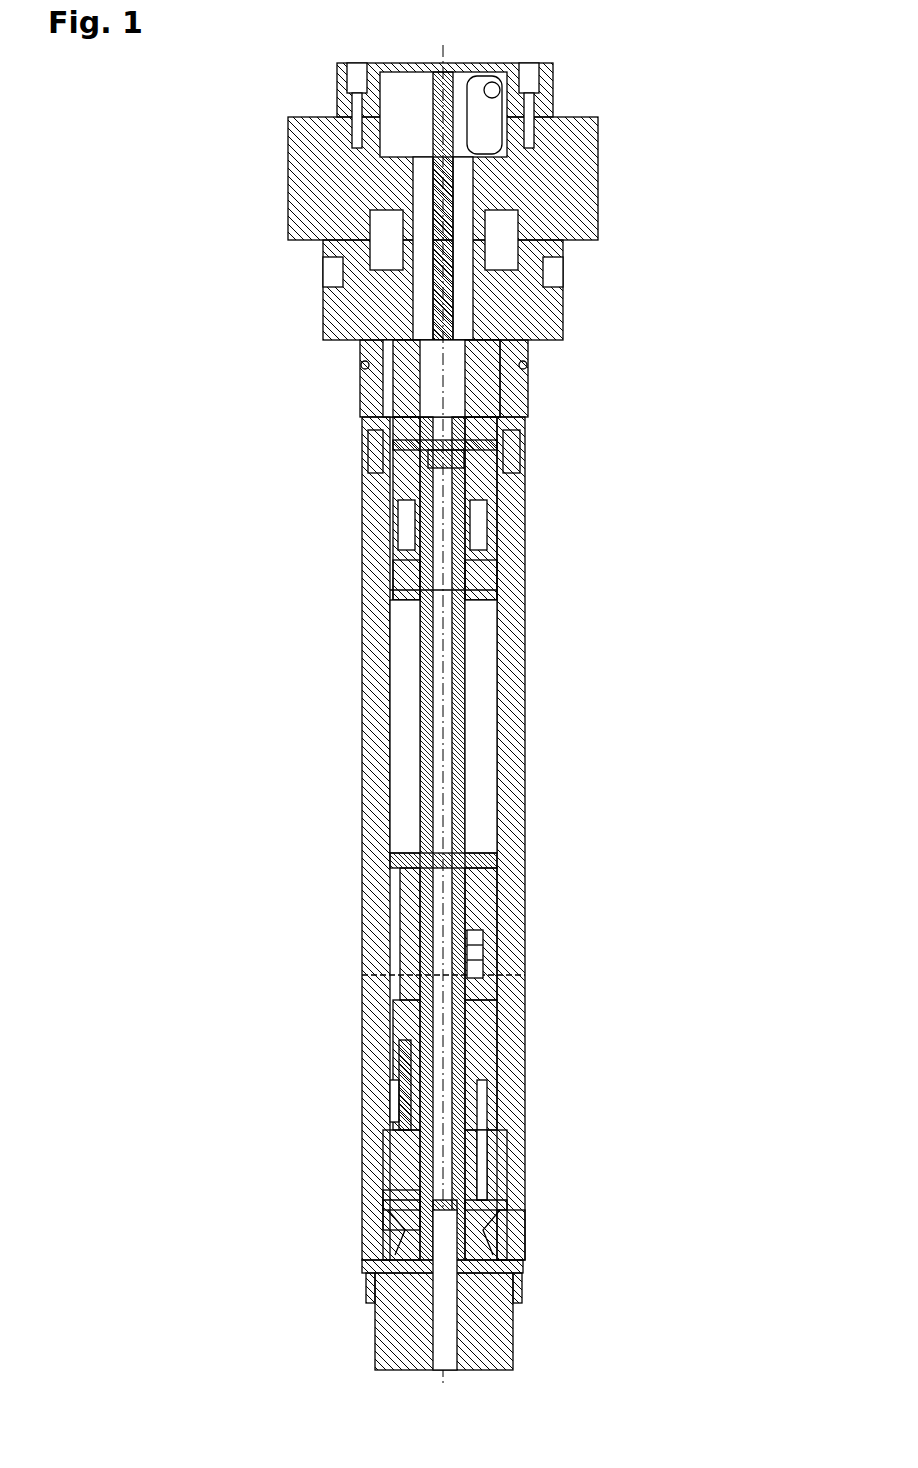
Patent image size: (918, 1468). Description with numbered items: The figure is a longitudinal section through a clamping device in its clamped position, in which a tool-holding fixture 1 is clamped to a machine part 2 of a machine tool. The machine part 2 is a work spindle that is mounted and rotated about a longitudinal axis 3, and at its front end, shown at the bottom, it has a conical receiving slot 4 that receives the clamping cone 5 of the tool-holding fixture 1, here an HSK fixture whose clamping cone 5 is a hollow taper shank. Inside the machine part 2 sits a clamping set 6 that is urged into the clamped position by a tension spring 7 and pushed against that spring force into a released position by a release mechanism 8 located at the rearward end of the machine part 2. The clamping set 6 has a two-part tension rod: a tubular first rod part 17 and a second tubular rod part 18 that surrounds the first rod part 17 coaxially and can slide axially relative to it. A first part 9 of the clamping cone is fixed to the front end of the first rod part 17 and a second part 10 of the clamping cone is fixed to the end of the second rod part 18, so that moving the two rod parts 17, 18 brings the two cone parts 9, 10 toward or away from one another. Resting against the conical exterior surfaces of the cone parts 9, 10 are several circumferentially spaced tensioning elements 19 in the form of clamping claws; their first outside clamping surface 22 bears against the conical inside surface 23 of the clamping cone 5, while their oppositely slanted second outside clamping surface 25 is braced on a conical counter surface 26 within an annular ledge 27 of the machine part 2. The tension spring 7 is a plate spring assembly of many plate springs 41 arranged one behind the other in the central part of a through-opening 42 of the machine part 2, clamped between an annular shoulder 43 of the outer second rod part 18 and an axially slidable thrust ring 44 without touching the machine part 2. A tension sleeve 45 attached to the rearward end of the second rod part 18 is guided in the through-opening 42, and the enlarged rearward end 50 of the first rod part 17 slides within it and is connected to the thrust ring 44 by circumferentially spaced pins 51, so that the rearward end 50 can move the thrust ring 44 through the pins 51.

The tool-holding fixture 1 is at (388, 1328).
The machine part 2 is at (517, 905).
The longitudinal axis 3 is at (444, 683).
The conical receiving slot 4 is at (400, 1193).
The clamping cone 5 is at (503, 1247).
The clamping set 6 is at (497, 1160).
The tension spring 7 is at (495, 843).
The release mechanism 8 is at (635, 214).
The first part of the clamping cone 9 is at (470, 1213).
The second part of the clamping cone 10 is at (472, 1080).
The first rod part 17 is at (453, 738).
The second rod part 18 is at (427, 755).
The tensioning elements 19 is at (407, 1160).
The first outside clamping surface 22 is at (505, 1208).
The conical inside surface 23 is at (377, 1208).
The second outside clamping surface 25 is at (402, 1125).
The conical counter surface 26 is at (485, 1127).
The annular ledge 27 is at (392, 1092).
The plate springs 41 is at (465, 856).
The through-opening 42 is at (400, 818).
The annular shoulder 43 is at (422, 887).
The thrust ring 44 is at (475, 570).
The tension sleeve 45 is at (407, 513).
The rearward end 50 is at (490, 452).
The pins 51 is at (480, 538).